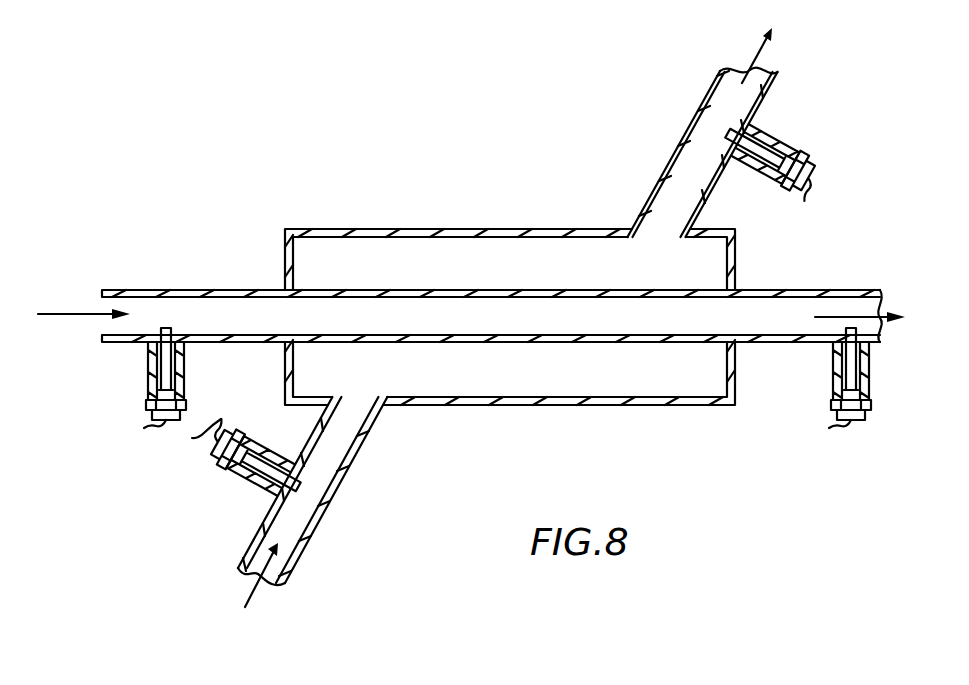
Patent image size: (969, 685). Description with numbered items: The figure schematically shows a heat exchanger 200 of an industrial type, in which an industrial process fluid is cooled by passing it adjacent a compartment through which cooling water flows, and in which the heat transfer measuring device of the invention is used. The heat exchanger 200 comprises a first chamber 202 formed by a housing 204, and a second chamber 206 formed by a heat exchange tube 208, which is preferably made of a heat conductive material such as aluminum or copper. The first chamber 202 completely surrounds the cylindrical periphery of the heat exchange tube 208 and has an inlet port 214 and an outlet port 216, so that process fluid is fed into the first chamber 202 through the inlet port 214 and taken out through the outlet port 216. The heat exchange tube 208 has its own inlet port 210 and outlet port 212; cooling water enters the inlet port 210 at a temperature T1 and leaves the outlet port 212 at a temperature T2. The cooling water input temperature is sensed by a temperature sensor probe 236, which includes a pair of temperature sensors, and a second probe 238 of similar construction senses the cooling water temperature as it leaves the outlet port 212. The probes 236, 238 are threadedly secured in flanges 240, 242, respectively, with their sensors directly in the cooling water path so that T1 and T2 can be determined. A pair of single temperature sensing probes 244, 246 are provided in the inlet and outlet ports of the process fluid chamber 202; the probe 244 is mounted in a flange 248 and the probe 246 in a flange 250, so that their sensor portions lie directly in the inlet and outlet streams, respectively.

The heat exchanger 200 is at (642, 418).
The first chamber 202 is at (462, 385).
The housing 204 is at (692, 405).
The second chamber 206 is at (517, 327).
The heat exchange tube 208 is at (377, 290).
The inlet port 210 is at (133, 321).
The outlet port 212 is at (788, 320).
The inlet port 214 is at (318, 506).
The outlet port 216 is at (722, 100).
The temperature sensor probe 236 is at (145, 412).
The second probe 238 is at (872, 412).
The flange 240 is at (152, 372).
The flange 242 is at (837, 377).
The single temperature sensing probe 244 is at (255, 422).
The single temperature sensing probe 246 is at (808, 165).
The flange 248 is at (240, 480).
The flange 250 is at (775, 140).